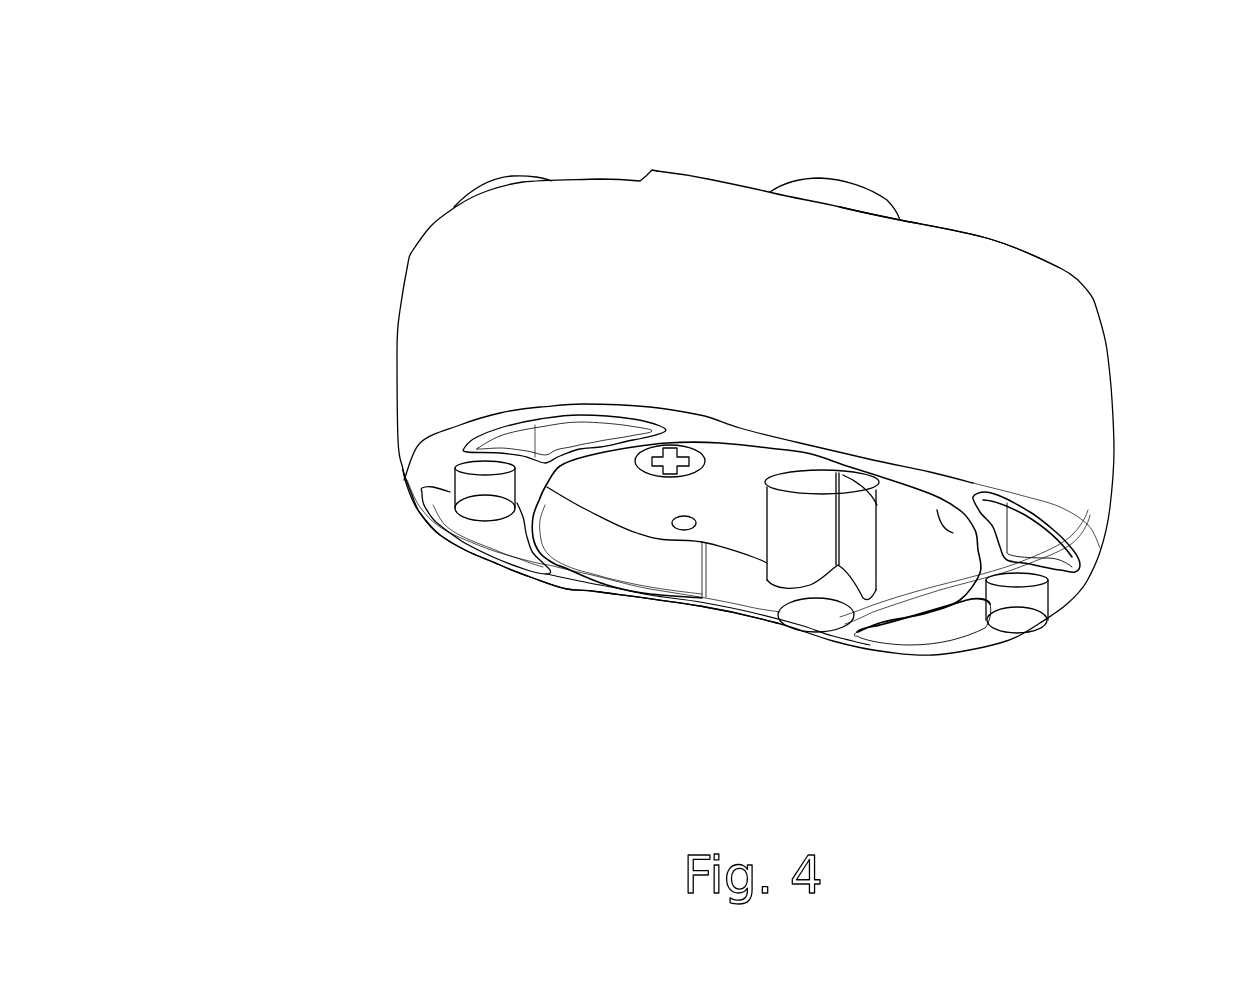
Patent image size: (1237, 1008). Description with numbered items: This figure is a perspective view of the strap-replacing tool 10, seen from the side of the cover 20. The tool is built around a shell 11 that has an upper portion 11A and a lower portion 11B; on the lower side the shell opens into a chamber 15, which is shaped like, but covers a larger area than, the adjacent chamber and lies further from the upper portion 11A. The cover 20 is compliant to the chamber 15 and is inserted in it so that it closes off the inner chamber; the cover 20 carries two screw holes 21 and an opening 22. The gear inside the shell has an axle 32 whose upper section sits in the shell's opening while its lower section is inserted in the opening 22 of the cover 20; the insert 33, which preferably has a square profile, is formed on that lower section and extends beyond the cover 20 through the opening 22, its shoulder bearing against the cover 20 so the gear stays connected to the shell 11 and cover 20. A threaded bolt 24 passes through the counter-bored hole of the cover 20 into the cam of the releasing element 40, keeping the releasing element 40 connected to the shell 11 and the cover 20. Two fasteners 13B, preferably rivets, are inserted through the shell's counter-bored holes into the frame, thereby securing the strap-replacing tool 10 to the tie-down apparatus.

The strap-replacing tool 10 is at (645, 137).
The shell 11 is at (443, 285).
The upper portion 11A is at (990, 240).
The lower portion 11B is at (552, 573).
The fasteners 13B is at (475, 505).
The chamber 15 is at (743, 594).
The cover 20 is at (877, 567).
The screw holes 21 is at (683, 527).
The opening 22 is at (877, 483).
The threaded bolt 24 is at (660, 455).
The axle 32 is at (860, 197).
The insert 33 is at (817, 617).
The releasing element 40 is at (489, 182).